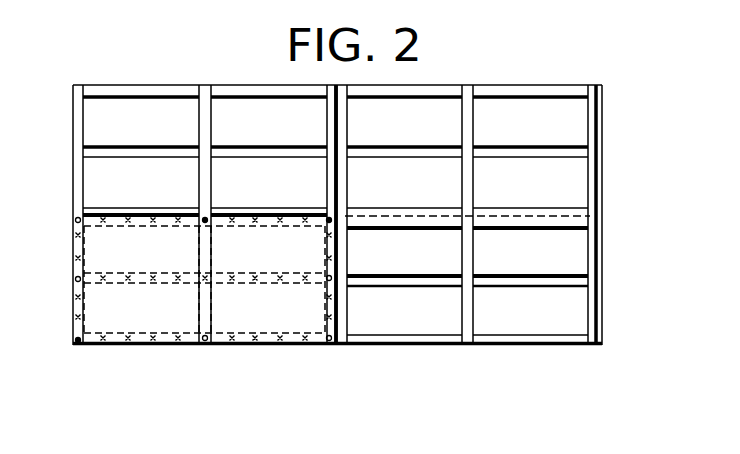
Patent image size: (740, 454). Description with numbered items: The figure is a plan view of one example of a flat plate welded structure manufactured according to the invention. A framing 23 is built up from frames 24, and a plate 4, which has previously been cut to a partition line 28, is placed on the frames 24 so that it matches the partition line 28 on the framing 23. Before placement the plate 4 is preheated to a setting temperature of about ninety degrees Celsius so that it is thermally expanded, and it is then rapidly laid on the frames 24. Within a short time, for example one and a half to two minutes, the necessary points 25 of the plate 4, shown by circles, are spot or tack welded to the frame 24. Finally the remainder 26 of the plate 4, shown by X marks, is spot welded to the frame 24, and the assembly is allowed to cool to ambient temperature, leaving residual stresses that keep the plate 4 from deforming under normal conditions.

The framing 23 is at (601, 175).
The frame 24 is at (125, 209).
The points 25 is at (77, 219).
The remainder 26 is at (74, 236).
The partition line 28 is at (347, 182).
The plate 4 is at (142, 316).